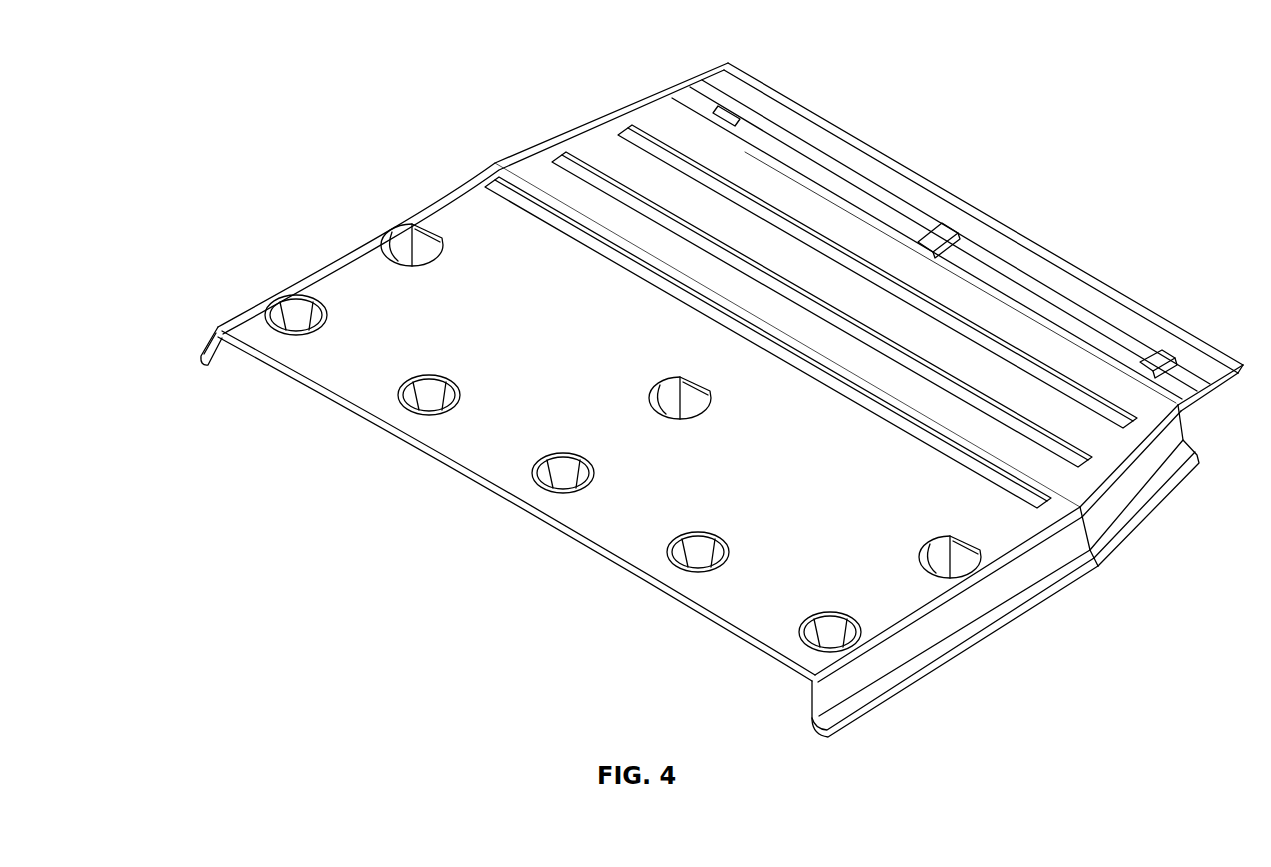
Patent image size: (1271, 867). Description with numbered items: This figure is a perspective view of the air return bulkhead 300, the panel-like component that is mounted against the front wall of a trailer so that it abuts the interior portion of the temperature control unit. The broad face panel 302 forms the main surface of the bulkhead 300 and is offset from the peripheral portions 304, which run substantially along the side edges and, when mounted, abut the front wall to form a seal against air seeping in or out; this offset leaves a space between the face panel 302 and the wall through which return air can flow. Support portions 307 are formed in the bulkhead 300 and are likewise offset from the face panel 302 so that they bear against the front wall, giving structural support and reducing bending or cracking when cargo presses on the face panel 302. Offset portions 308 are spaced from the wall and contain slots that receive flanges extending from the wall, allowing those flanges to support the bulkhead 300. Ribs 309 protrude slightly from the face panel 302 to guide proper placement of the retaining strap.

The air return bulkhead 300 is at (470, 60).
The face panel 302 is at (470, 449).
The peripheral portions 304 is at (204, 352).
The support portions 307 is at (429, 396).
The offset portion 308 is at (406, 243).
The ribs 309 is at (795, 142).